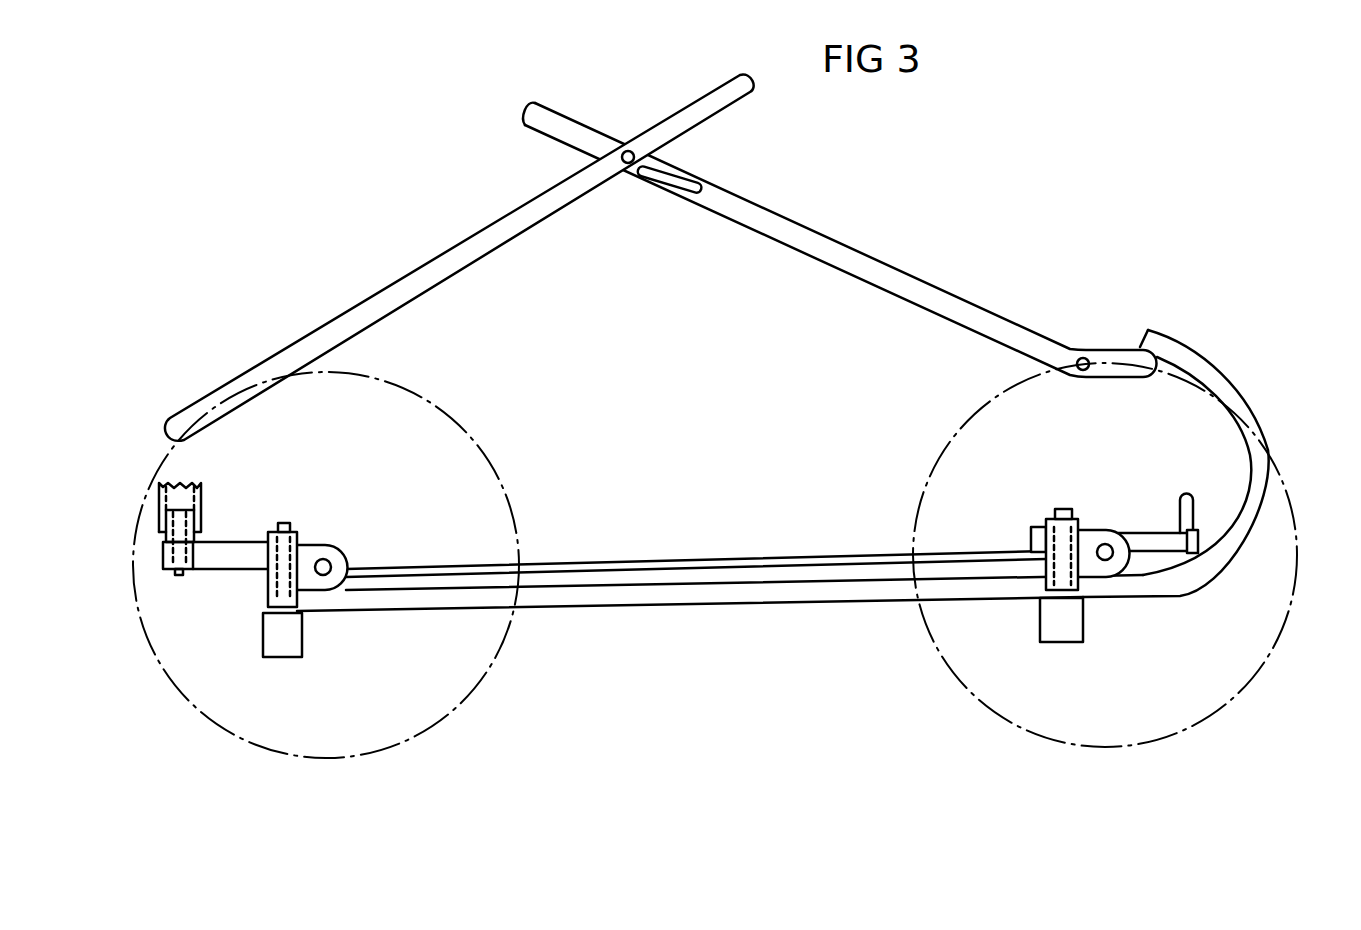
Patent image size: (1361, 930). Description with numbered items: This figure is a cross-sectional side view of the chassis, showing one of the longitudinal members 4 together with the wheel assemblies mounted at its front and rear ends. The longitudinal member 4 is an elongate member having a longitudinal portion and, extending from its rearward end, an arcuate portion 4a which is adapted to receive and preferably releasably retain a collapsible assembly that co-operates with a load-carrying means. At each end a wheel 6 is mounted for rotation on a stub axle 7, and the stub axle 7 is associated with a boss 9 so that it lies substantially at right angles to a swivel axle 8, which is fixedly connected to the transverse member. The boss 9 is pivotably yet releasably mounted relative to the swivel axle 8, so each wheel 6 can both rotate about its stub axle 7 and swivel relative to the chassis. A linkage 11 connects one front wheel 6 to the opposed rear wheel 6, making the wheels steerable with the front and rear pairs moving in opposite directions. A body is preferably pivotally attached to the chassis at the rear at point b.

The longitudinal member 4 is at (601, 593).
The arcuate portion 4a is at (1233, 382).
The wheel 6 is at (427, 712).
The stub axle 7 is at (323, 575).
The swivel axle 8 is at (268, 593).
The boss 9 is at (307, 578).
The linkage 11 is at (742, 555).
The rear pivotal attachment point b is at (1135, 337).